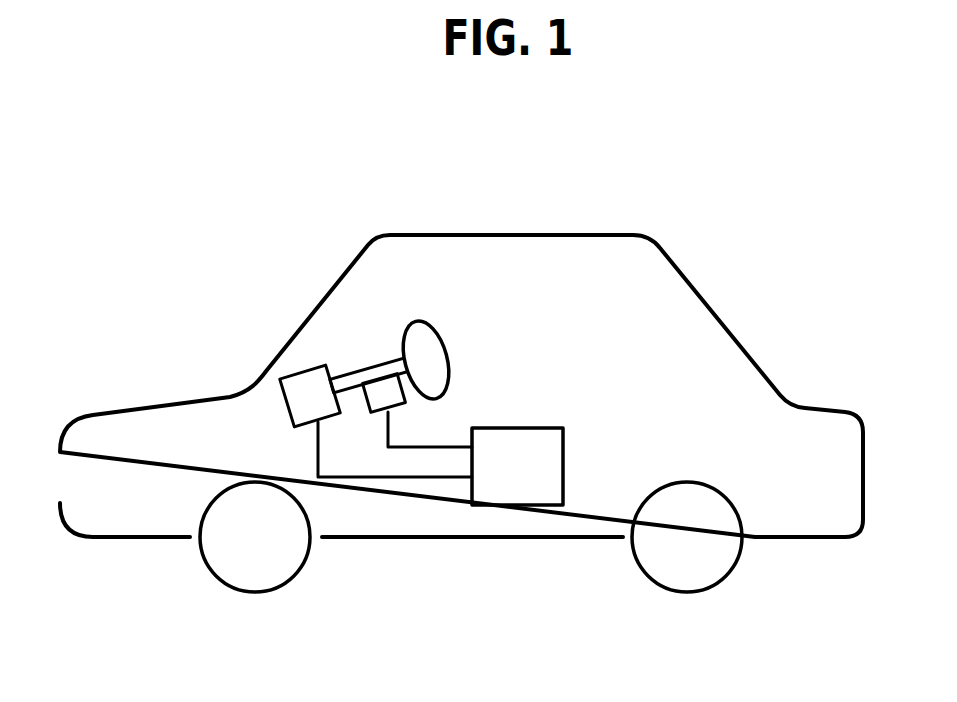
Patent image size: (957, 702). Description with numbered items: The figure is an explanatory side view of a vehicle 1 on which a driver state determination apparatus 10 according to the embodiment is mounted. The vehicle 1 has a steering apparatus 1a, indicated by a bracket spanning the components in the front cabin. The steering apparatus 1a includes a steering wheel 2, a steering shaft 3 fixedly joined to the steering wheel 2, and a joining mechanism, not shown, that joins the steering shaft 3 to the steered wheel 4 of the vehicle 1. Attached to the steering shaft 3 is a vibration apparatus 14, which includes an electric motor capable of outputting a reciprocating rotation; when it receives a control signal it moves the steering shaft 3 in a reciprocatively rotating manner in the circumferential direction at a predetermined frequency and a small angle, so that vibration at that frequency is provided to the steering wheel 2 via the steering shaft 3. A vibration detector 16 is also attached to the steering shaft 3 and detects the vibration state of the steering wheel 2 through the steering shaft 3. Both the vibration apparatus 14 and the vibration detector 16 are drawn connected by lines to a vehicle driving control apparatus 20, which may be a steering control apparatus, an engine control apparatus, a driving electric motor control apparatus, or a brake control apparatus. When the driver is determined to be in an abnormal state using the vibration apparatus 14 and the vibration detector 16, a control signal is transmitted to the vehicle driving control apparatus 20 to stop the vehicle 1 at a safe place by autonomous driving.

The vehicle 1 is at (707, 305).
The steering apparatus 1a is at (267, 201).
The steering wheel 2 is at (411, 321).
The steering shaft 3 is at (362, 373).
The steered wheel 4 is at (310, 553).
The driver state determination apparatus 10 is at (523, 588).
The vibration apparatus 14 is at (298, 370).
The vibration detector 16 is at (398, 410).
The vehicle driving control apparatus 20 is at (548, 505).